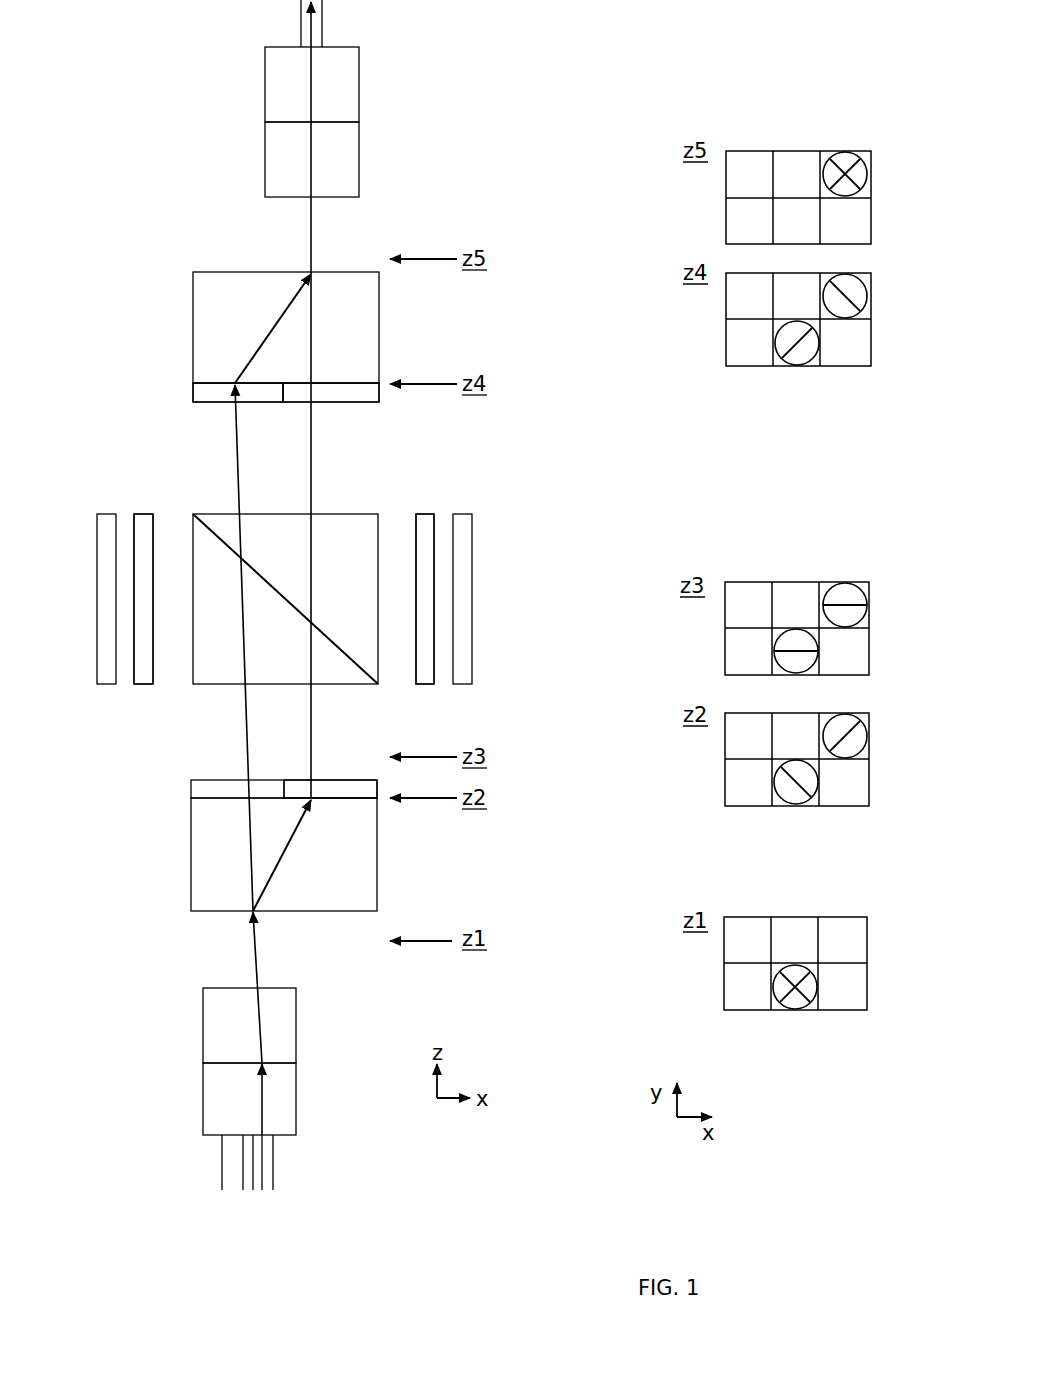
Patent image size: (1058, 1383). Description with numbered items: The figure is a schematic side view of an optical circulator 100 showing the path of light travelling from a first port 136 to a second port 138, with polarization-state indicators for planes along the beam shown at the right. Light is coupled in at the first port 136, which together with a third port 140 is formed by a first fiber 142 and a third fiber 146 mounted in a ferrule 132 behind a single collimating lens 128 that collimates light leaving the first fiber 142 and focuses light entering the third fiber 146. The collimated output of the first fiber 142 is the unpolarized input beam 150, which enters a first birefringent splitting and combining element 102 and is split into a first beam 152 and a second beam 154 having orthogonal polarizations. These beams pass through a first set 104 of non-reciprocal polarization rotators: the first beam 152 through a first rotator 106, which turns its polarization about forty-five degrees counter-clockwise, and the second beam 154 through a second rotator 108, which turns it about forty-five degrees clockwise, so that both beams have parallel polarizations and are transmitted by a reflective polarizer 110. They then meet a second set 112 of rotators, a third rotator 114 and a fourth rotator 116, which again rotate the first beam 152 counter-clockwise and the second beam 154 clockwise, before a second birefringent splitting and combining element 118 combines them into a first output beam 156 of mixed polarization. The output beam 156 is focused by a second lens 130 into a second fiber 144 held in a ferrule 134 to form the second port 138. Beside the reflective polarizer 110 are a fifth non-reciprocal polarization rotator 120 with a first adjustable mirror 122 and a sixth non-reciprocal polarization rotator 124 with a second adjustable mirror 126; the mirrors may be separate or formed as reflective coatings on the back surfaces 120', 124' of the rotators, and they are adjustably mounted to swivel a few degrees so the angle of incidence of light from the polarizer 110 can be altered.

The optical circulator 100 is at (614, 116).
The first birefringent splitting and combining element 102 is at (195, 855).
The first set of non-reciprocal polarization rotators 104 is at (175, 765).
The first non-reciprocal polarization rotator 106 is at (190, 786).
The second non-reciprocal polarization rotator 108 is at (343, 779).
The reflective polarizer 110 is at (193, 684).
The second set of non-reciprocal polarization rotators 112 is at (180, 396).
The third non-reciprocal polarization rotator 114 is at (212, 399).
The fourth non-reciprocal polarization rotator 116 is at (337, 397).
The second birefringent splitting and combining element 118 is at (193, 287).
The fifth non-reciprocal polarization rotator 120 is at (420, 562).
The back surface of fifth non-reciprocal polarization rotator 120' is at (489, 552).
The first adjustable mirror 122 is at (473, 537).
The sixth non-reciprocal polarization rotator 124 is at (169, 573).
The back surface of sixth non-reciprocal polarization rotator 124' is at (125, 576).
The second adjustable mirror 126 is at (110, 513).
The collimating lens 128 is at (296, 1028).
The second lens 130 is at (265, 169).
The ferrule 132 is at (296, 1090).
The ferrule 134 is at (265, 83).
The first port 136 is at (269, 1203).
The second port 138 is at (477, 21).
The third port 140 is at (230, 1200).
The first fiber 142 is at (273, 1157).
The second fiber 144 is at (322, 15).
The third fiber 146 is at (222, 1163).
The input beam 150 is at (253, 941).
The first beam 152 is at (238, 695).
The second beam 154 is at (311, 704).
The first output beam 156 is at (311, 228).